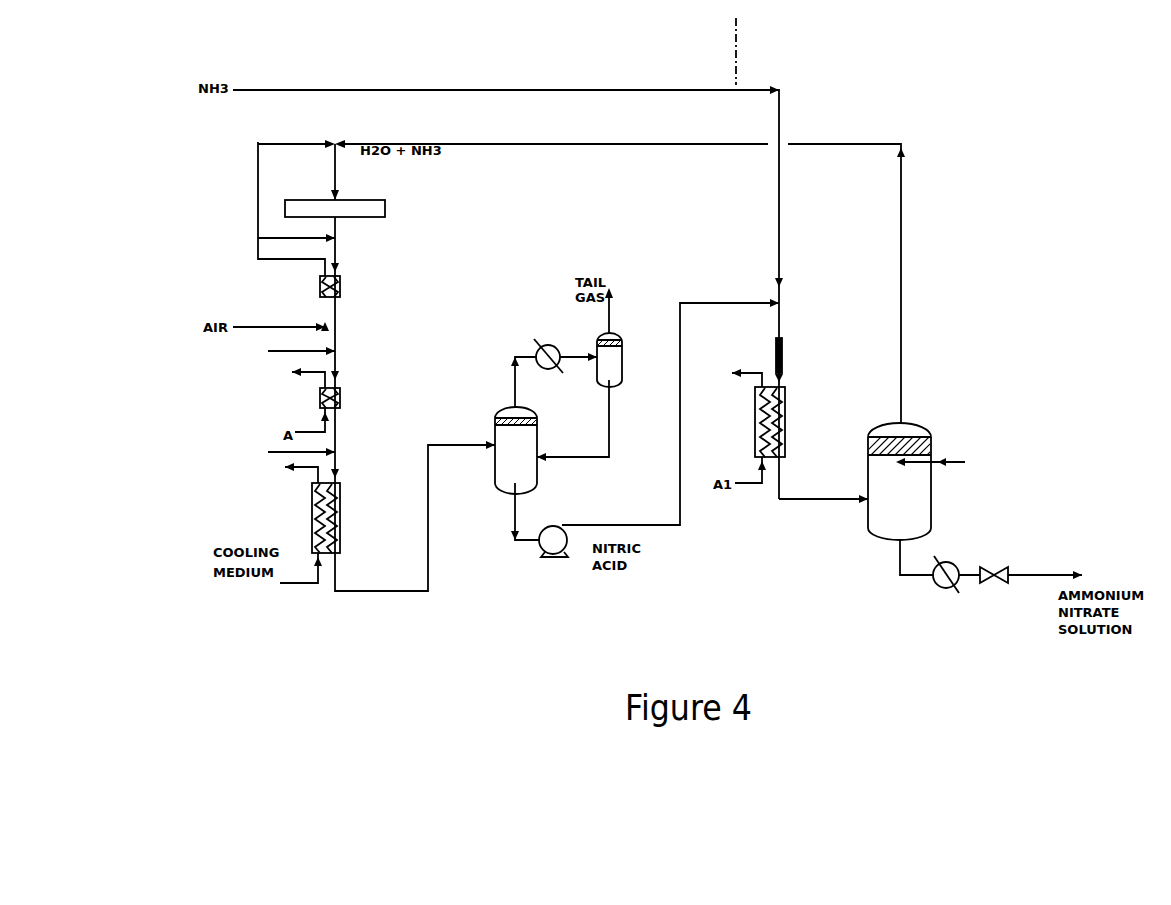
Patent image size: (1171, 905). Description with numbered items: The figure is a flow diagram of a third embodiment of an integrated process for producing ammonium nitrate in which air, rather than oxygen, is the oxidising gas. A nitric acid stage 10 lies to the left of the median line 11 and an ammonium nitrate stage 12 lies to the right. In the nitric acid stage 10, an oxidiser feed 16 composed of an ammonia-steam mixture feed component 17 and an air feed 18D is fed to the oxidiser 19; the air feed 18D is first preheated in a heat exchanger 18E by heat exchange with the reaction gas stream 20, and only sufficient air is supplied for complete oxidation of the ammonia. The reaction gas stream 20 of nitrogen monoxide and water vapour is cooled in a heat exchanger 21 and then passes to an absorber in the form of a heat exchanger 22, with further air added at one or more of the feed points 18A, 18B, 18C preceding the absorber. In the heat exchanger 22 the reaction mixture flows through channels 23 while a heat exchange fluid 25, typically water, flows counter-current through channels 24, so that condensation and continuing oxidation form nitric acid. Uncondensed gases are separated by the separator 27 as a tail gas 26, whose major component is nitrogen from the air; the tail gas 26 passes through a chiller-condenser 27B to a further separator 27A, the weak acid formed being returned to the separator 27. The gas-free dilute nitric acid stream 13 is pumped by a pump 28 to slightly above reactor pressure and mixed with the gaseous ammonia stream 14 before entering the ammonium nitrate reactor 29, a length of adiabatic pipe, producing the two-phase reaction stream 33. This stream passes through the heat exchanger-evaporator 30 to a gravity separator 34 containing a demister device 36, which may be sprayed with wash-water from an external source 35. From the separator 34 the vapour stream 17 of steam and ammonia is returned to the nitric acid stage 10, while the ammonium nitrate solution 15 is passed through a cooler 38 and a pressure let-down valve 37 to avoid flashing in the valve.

The nitric acid producing stage 10 is at (567, 40).
The median line 11 is at (737, 35).
The ammonium nitrate producing stage 12 is at (872, 40).
The dilute nitric acid stream 13 is at (690, 298).
The ammonia stream 14 is at (782, 115).
The ammonium nitrate product stream 15 is at (898, 566).
The oxidiser feed 16 is at (330, 177).
The ammonia-steam mixture feed component 17 is at (512, 132).
The feed point 18A is at (278, 237).
The feed point 18B is at (280, 352).
The feed point 18C is at (277, 453).
The air feed 18D is at (275, 140).
The heat exchanger 18E is at (345, 285).
The oxidiser 19 is at (355, 198).
The reaction gas stream 20 is at (340, 362).
The heat exchanger 21 is at (345, 398).
The heat exchanger absorber 22 is at (330, 508).
The channels 23 is at (345, 510).
The channels 24 is at (318, 517).
The heat exchange fluid 25 is at (283, 585).
The tail gas 26 is at (512, 362).
The separator 27 is at (543, 440).
The further separator 27A is at (622, 377).
The chiller-condenser 27B is at (548, 343).
The pump 28 is at (553, 558).
The ammonium nitrate reactor 29 is at (772, 355).
The evaporator 30 is at (787, 412).
The reaction stream 33 is at (835, 503).
The gravity separator 34 is at (901, 467).
The external source of wash-water 35 is at (962, 463).
The demister device 36 is at (880, 438).
The pressure let-down valve 37 is at (995, 585).
The cooler 38 is at (945, 593).